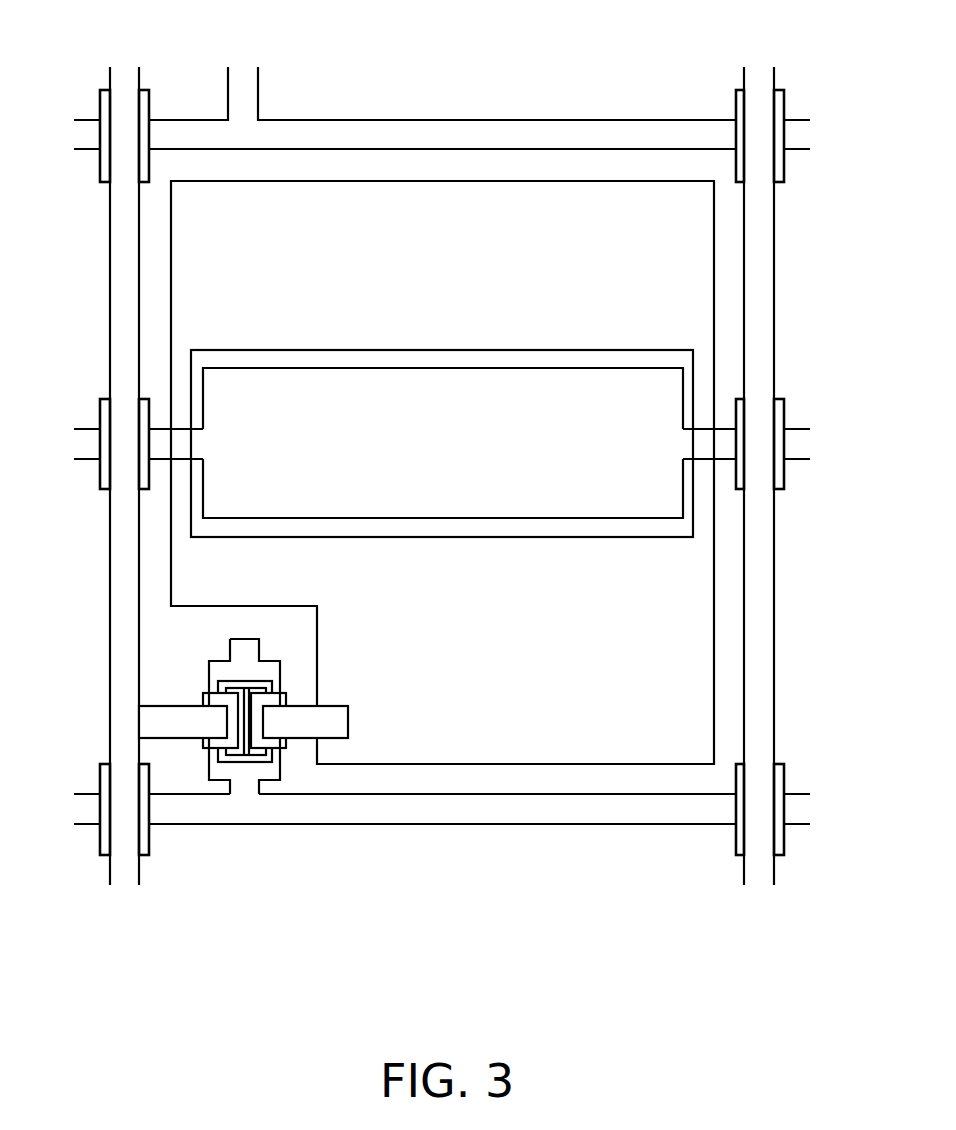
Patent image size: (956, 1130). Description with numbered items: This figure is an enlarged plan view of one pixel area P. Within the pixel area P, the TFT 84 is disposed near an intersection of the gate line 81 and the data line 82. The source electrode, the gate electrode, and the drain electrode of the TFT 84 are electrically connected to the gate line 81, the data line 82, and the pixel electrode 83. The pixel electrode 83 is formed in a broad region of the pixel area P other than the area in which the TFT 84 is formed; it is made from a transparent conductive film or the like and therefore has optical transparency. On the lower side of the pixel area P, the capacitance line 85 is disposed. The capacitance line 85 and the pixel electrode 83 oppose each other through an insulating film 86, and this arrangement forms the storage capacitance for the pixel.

The gate line 81 is at (393, 132).
The data line 82 is at (118, 288).
The pixel electrode 83 is at (693, 625).
The TFT 84 is at (207, 763).
The capacitance line 85 is at (88, 442).
The insulating film 86 is at (580, 528).
The pixel area P is at (495, 85).